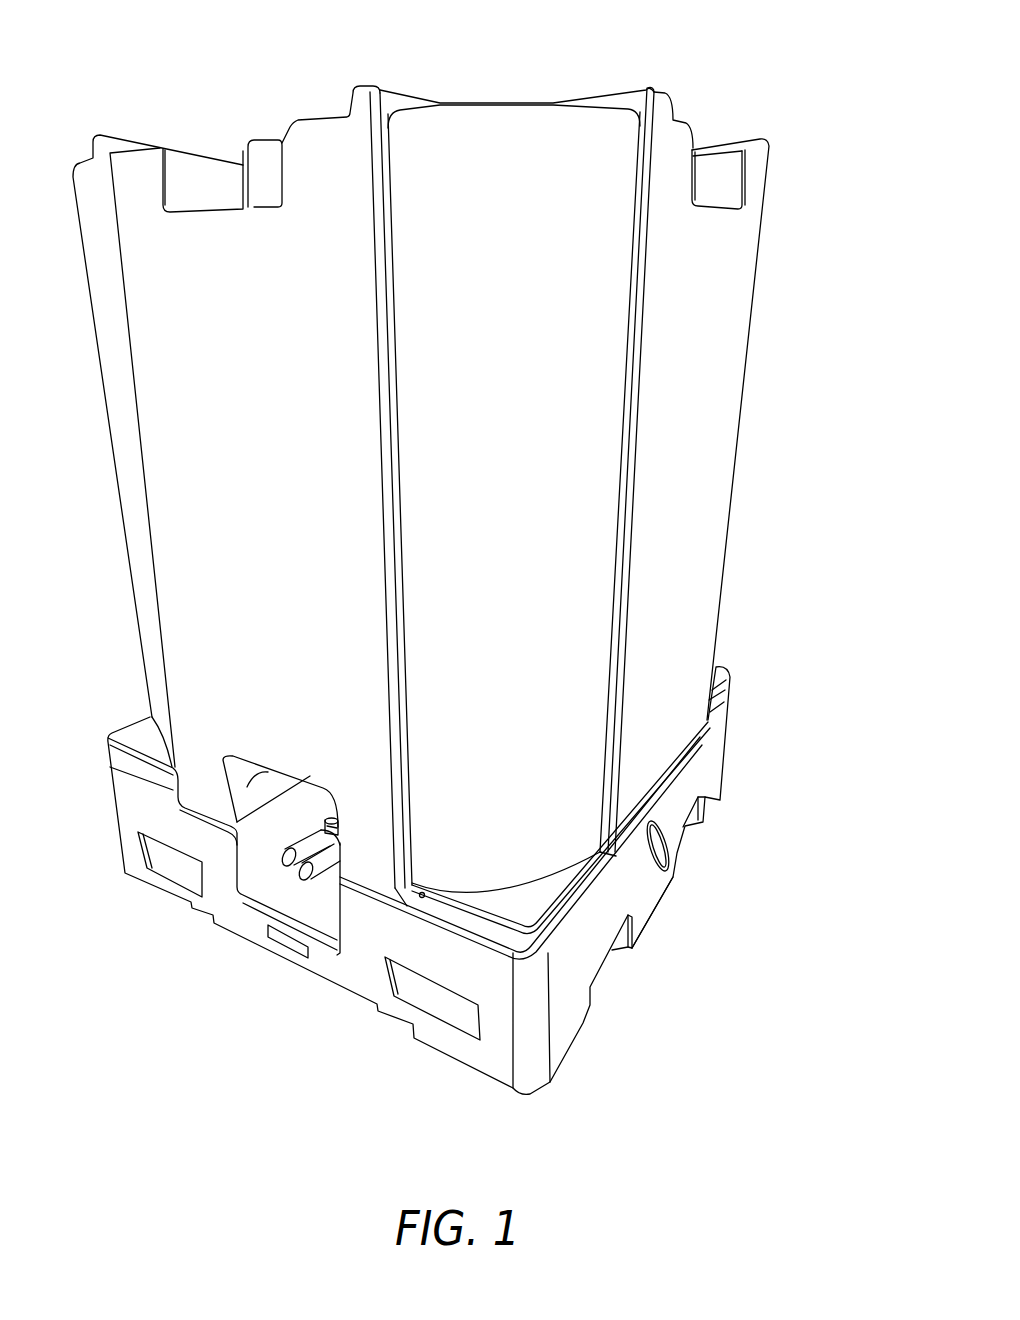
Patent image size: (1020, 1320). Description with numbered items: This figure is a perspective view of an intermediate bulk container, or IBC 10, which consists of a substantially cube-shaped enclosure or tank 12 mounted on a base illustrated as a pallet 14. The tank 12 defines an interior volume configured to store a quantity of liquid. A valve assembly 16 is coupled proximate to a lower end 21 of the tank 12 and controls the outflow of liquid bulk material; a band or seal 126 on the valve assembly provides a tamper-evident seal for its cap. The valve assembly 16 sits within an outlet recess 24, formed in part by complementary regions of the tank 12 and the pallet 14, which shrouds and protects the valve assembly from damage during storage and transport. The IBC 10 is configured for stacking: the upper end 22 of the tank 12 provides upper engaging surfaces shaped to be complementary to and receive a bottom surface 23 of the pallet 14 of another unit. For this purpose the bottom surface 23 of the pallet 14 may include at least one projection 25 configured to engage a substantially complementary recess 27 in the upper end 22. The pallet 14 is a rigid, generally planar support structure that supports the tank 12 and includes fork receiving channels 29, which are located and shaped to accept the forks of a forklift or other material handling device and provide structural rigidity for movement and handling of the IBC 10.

The intermediate bulk container 10 is at (797, 494).
The tank 12 is at (740, 312).
The pallet 14 is at (720, 743).
The valve assembly 16 is at (333, 822).
The lower end 21 is at (655, 808).
The upper end 22 is at (132, 143).
The bottom surface 23 is at (605, 950).
The outlet recess 24 is at (270, 790).
The projection 25 is at (667, 890).
The recess 27 is at (720, 168).
The fork receiving channels 29 is at (187, 875).
The seal 126 is at (330, 860).